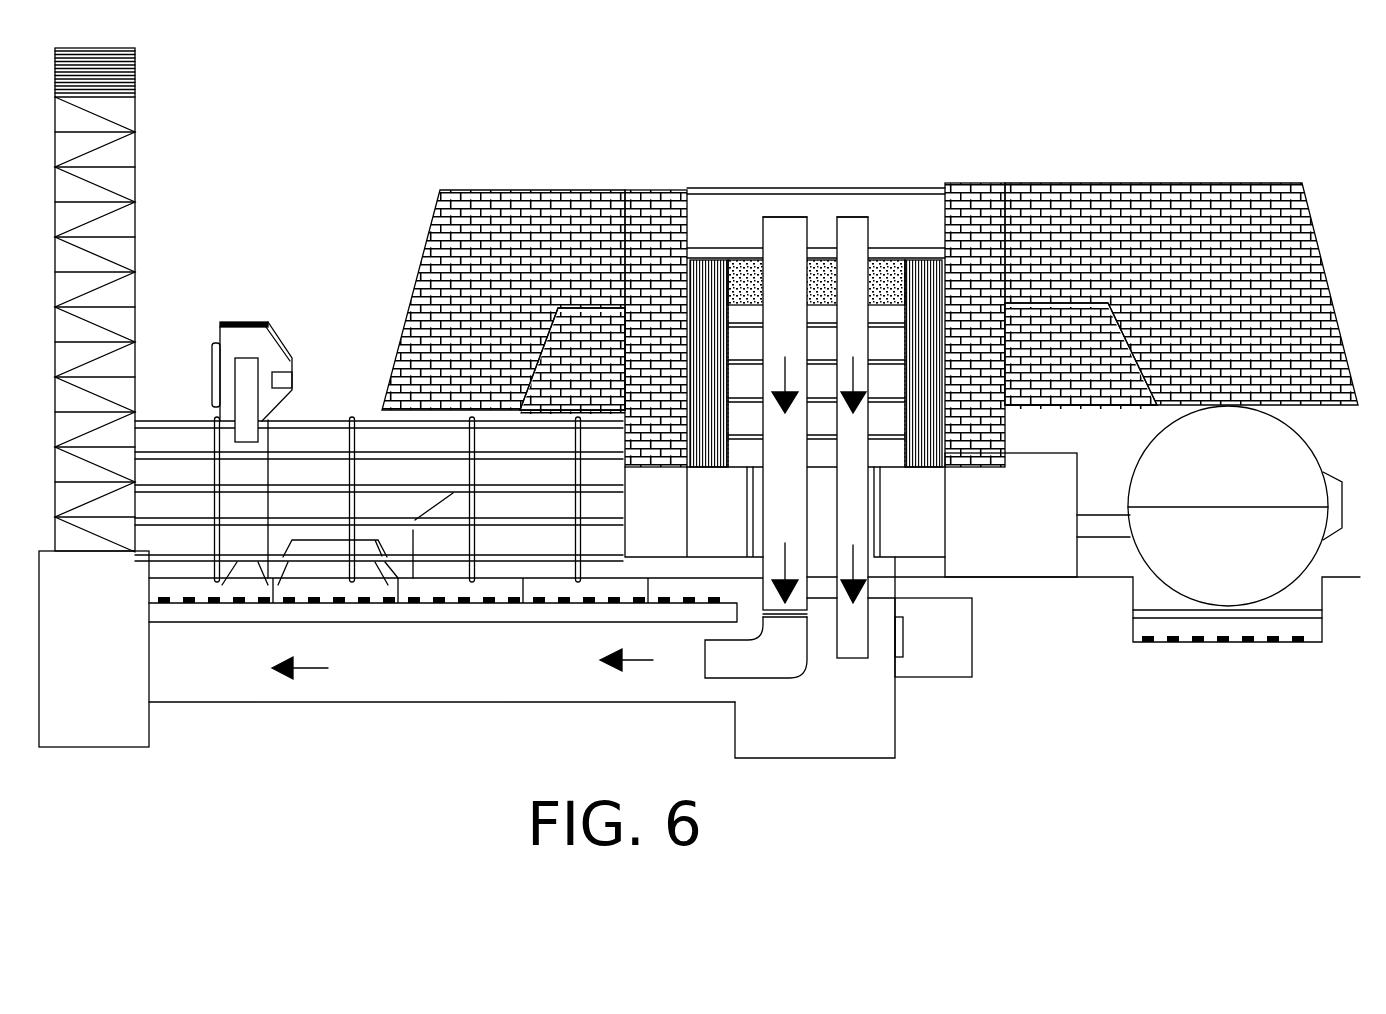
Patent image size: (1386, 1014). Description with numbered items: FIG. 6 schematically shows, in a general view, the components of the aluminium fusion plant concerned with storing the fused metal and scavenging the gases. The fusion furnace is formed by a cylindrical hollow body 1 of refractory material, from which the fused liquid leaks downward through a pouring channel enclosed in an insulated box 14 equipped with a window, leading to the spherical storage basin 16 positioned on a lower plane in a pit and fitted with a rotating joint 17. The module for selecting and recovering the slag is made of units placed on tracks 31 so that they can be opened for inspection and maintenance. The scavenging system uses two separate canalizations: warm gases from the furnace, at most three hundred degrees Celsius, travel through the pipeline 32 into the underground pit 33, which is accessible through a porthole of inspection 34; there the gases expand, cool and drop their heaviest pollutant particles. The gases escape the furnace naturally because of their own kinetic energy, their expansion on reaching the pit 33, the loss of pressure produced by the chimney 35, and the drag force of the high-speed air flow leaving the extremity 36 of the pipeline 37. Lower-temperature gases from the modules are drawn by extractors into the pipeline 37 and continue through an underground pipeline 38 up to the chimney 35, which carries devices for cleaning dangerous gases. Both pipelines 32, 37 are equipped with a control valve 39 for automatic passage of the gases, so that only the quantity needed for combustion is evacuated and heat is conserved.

The cylindrical hollow body 1 is at (818, 320).
The box 14 is at (1015, 547).
The spherical storage basin 16 is at (1290, 465).
The rotating joint 17 is at (1105, 525).
The tracks 31 is at (1195, 637).
The pipeline 32 is at (858, 233).
The underground pit 33 is at (853, 727).
The porthole of inspection 34 is at (903, 643).
The chimney 35 is at (137, 268).
The extremity 36 is at (722, 660).
The pipeline 37 is at (780, 242).
The underground pipeline 38 is at (367, 670).
The control valve 39 is at (793, 258).